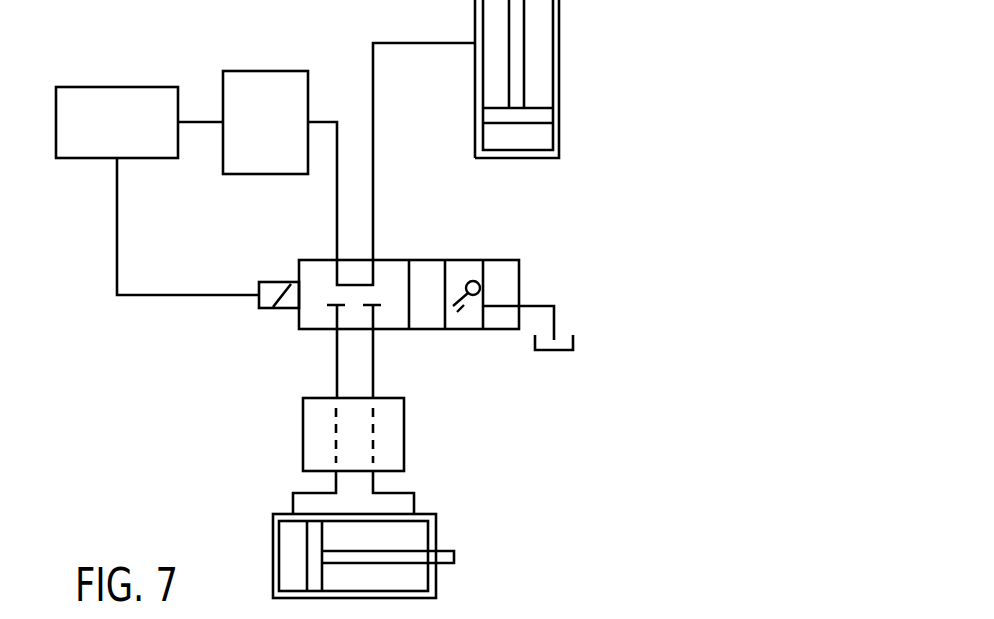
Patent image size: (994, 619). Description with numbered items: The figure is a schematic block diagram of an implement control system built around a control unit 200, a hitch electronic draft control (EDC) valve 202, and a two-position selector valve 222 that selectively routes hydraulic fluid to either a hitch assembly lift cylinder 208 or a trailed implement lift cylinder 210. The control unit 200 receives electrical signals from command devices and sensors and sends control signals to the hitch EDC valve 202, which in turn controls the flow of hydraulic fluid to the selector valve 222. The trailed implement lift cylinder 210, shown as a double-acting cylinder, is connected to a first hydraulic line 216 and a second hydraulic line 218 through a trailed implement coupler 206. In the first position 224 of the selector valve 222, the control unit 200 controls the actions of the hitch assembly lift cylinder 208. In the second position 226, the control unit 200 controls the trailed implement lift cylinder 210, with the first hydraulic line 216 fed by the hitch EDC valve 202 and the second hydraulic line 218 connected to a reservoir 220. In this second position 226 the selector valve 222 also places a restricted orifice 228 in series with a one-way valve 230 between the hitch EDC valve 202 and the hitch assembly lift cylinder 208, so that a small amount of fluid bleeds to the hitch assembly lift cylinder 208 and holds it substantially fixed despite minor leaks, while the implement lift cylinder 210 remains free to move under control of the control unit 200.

The control unit 200 is at (117, 87).
The hitch electronic draft control (EDC) valve 202 is at (263, 71).
The trailed implement coupler 206 is at (405, 452).
The hitch assembly lift cylinder 208 is at (559, 8).
The trailed implement lift cylinder 210 is at (436, 517).
The first hydraulic line 216 is at (334, 345).
The second hydraulic line 218 is at (376, 345).
The reservoir 220 is at (573, 338).
The two-position selector valve 222 is at (460, 297).
The first position 224 is at (390, 263).
The second position 226 is at (500, 303).
The restricted orifice 228 is at (451, 308).
The one-way valve 230 is at (481, 290).